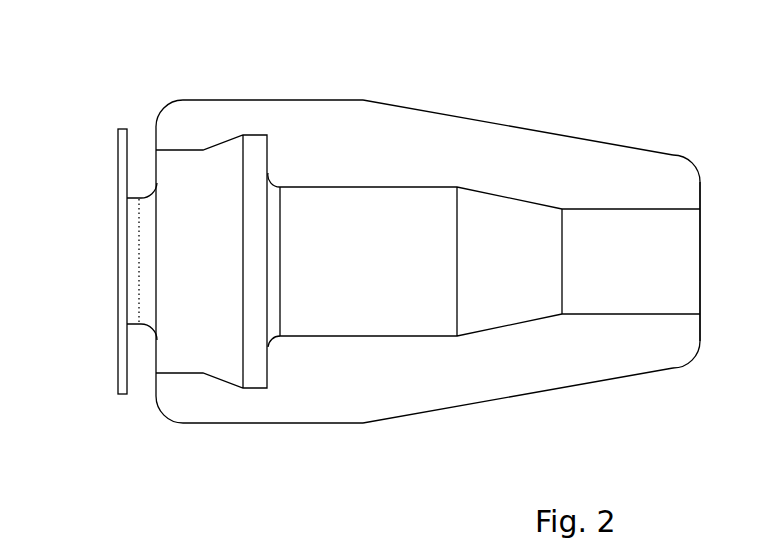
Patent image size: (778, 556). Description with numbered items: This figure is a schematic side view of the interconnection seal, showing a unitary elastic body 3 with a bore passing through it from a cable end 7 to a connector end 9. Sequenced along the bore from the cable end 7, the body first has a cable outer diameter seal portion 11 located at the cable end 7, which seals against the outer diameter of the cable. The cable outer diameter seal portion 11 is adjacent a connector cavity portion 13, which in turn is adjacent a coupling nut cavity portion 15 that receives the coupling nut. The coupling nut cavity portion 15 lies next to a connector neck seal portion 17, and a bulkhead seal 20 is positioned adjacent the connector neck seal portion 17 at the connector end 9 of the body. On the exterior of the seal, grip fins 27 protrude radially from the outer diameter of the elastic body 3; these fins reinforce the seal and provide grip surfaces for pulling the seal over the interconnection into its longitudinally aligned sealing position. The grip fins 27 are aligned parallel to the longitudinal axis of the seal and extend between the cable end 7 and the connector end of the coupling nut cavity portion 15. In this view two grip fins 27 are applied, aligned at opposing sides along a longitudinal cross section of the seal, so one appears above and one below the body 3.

The unitary elastic body 3 is at (343, 198).
The cable end 7 is at (725, 270).
The connector end 9 is at (102, 245).
The cable outer diameter seal portion 11 is at (618, 243).
The connector cavity portion 13 is at (436, 216).
The coupling nut cavity portion 15 is at (216, 165).
The connector neck seal portion 17 is at (140, 196).
The bulkhead seal 20 is at (115, 172).
The grip fins 27 is at (530, 165).